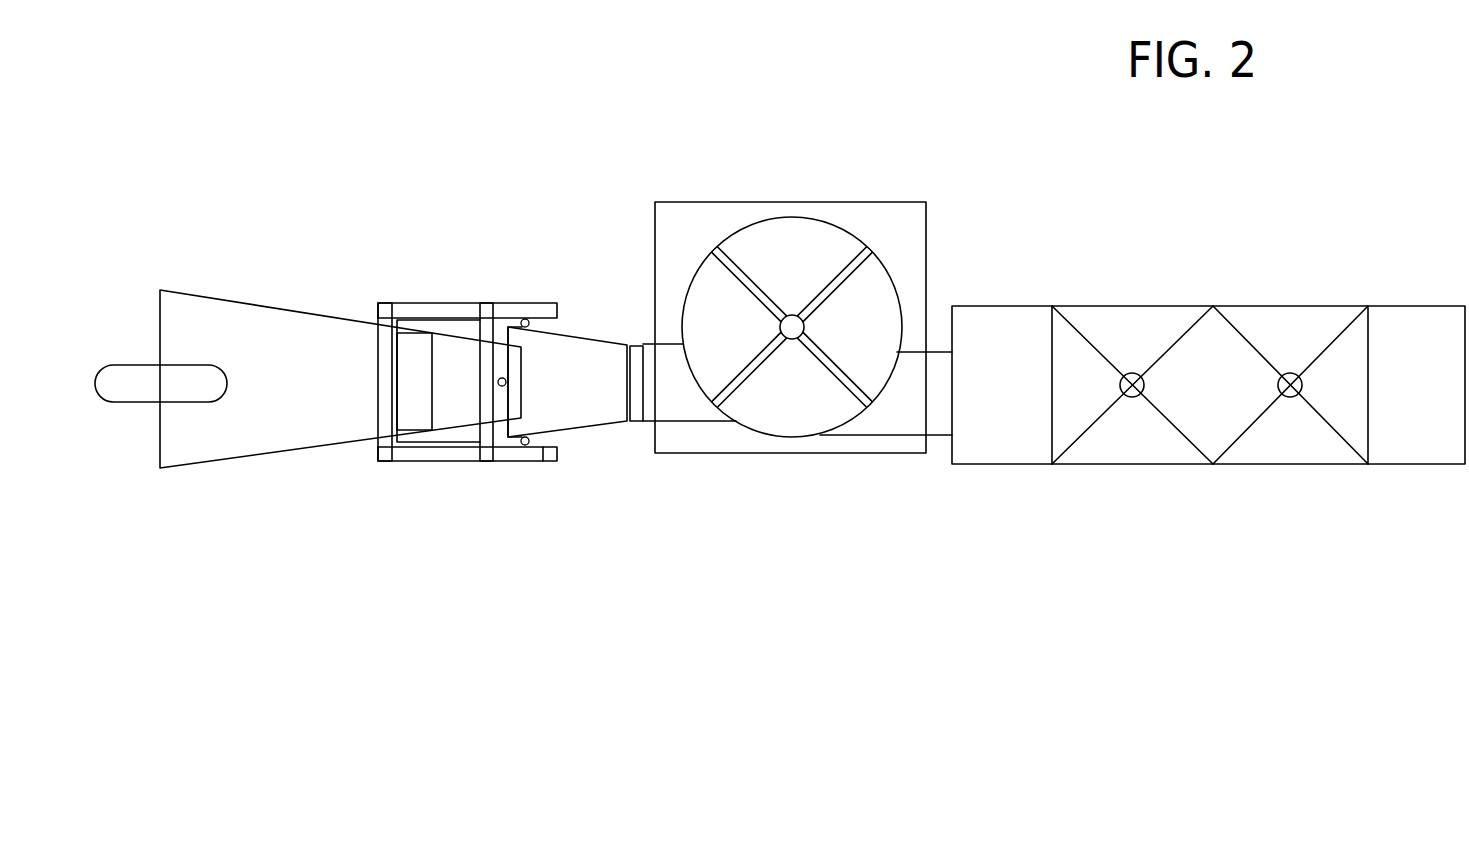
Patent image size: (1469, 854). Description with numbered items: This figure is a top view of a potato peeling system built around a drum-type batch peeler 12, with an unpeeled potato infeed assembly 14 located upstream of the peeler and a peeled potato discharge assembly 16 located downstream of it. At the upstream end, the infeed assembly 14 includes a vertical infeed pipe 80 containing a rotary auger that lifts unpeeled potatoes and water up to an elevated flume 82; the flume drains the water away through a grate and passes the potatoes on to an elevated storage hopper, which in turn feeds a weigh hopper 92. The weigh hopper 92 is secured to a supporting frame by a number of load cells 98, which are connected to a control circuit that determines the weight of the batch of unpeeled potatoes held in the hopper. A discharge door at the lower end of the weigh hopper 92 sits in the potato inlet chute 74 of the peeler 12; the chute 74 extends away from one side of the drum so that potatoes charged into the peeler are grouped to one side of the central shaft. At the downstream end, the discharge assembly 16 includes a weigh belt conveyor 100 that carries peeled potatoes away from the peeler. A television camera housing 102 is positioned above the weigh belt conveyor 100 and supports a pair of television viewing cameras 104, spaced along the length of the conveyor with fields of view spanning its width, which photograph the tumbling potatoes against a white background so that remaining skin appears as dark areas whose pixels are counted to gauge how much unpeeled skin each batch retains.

The drum-type batch peeler 12 is at (798, 172).
The unpeeled potato infeed assembly 14 is at (397, 258).
The peeled potato discharge assembly 16 is at (1160, 247).
The potato inlet chute 74 is at (675, 422).
The vertical infeed pipe 80 is at (118, 365).
The elevated flume 82 is at (205, 435).
The weigh hopper 92 is at (585, 403).
The load cells 98 is at (527, 438).
The weigh belt conveyor 100 is at (1007, 430).
The television camera housing 102 is at (1368, 363).
The television viewing cameras 104 is at (1133, 397).